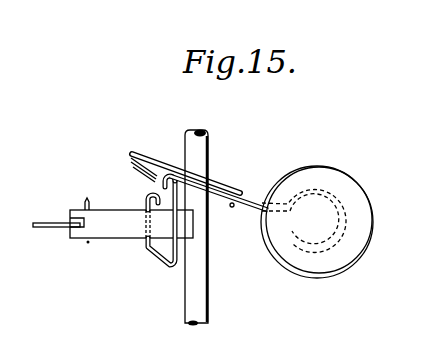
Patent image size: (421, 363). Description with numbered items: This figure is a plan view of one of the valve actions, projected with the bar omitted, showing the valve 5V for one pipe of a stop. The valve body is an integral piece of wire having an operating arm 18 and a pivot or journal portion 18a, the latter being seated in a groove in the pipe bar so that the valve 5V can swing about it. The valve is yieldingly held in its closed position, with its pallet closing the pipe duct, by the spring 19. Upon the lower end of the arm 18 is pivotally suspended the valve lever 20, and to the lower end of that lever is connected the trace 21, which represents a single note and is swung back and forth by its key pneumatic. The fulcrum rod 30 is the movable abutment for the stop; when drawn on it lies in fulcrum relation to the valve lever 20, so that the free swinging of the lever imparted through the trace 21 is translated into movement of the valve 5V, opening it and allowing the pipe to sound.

The spring 19 is at (213, 178).
The pivot or journal portion 18a is at (167, 184).
The operating arm 18 is at (158, 257).
The valve lever 20 is at (125, 236).
The trace 21 is at (64, 230).
The fulcrum rod 30 is at (203, 283).
The valve 5V is at (343, 265).